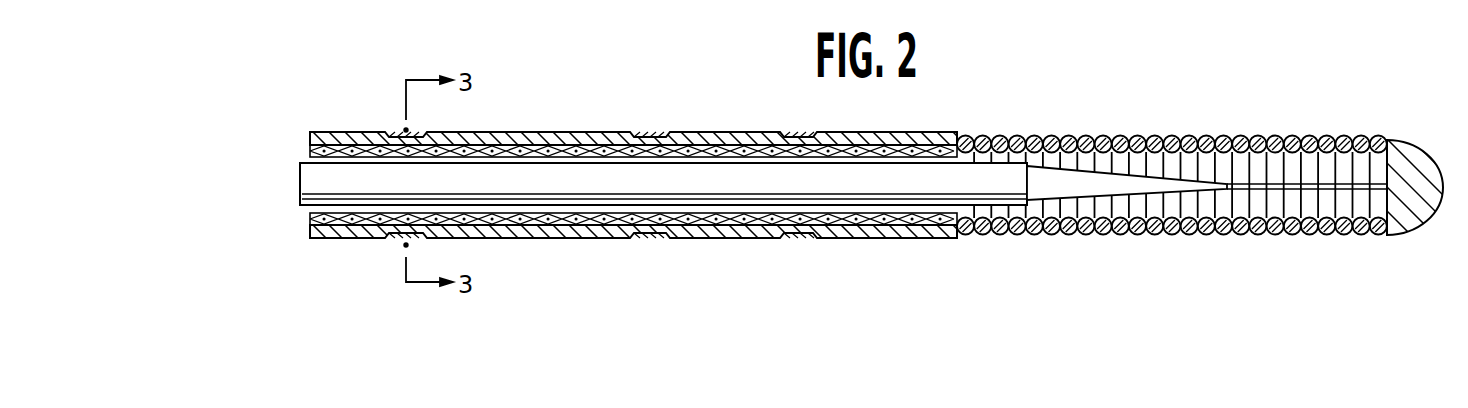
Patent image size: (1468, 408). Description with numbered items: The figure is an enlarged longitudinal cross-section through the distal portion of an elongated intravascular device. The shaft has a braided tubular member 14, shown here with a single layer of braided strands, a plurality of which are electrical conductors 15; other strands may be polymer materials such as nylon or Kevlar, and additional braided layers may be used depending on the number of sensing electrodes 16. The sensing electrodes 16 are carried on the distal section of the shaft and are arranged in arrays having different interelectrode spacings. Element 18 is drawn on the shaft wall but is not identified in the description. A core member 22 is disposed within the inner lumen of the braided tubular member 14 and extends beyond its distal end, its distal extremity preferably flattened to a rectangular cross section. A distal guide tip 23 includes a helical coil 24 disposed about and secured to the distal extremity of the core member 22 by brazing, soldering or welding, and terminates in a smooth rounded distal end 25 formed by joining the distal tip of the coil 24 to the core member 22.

The braided tubular member 14 is at (310, 149).
The electrical conductors 15 is at (528, 150).
The sensing electrodes 16 is at (650, 143).
The outer jacket bottom wall 18 is at (581, 234).
The core member 22 is at (366, 182).
The distal guide tip 23 is at (1187, 146).
The helical coil 24 is at (1208, 228).
The smooth rounded distal end 25 is at (1407, 152).